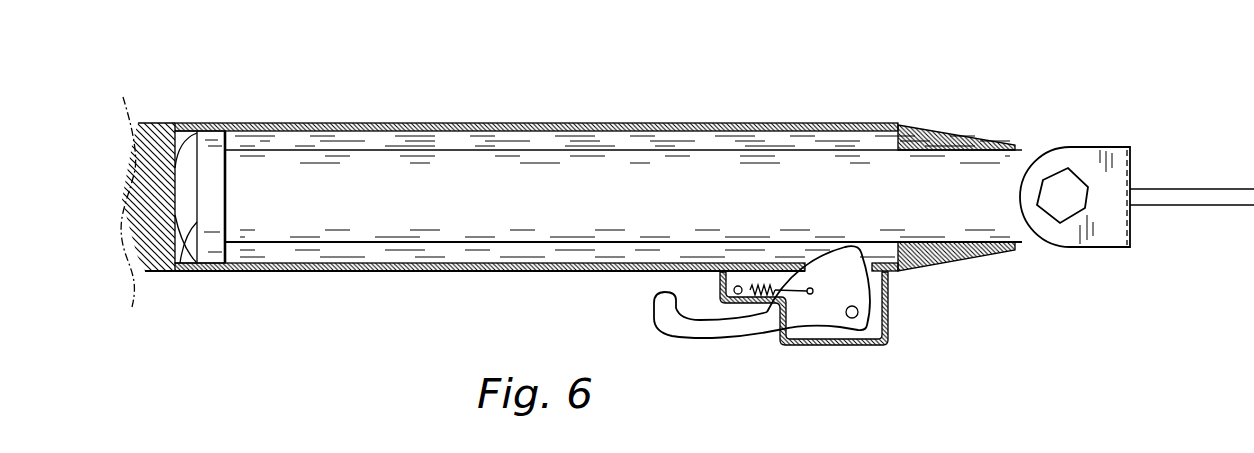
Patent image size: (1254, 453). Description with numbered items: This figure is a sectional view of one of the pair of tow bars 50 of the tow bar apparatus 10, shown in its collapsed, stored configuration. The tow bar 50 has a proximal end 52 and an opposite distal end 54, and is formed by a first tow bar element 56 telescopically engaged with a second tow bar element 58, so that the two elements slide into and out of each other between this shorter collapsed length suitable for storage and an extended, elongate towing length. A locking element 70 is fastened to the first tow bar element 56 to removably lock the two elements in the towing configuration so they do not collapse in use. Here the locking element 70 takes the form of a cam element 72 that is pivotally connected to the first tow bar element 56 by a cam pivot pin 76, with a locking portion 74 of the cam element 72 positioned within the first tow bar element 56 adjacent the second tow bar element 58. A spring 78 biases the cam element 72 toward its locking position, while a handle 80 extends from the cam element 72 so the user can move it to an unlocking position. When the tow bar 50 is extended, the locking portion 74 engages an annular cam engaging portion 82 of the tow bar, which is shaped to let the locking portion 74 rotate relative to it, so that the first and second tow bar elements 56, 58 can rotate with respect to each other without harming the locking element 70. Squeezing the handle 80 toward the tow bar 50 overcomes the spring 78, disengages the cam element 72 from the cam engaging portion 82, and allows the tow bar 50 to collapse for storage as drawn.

The tow bar apparatus 10 is at (813, 100).
The tow bar 50 is at (399, 85).
The proximal end 52 is at (155, 122).
The distal end 54 is at (1065, 147).
The first tow bar element 56 is at (277, 122).
The second tow bar element 58 is at (605, 180).
The locking element 70 is at (883, 352).
The cam element 72 is at (862, 297).
The locking portion 74 is at (847, 258).
The cam pivot pin 76 is at (850, 318).
The spring 78 is at (755, 292).
The handle 80 is at (699, 330).
The cam engaging portion 82 is at (187, 248).